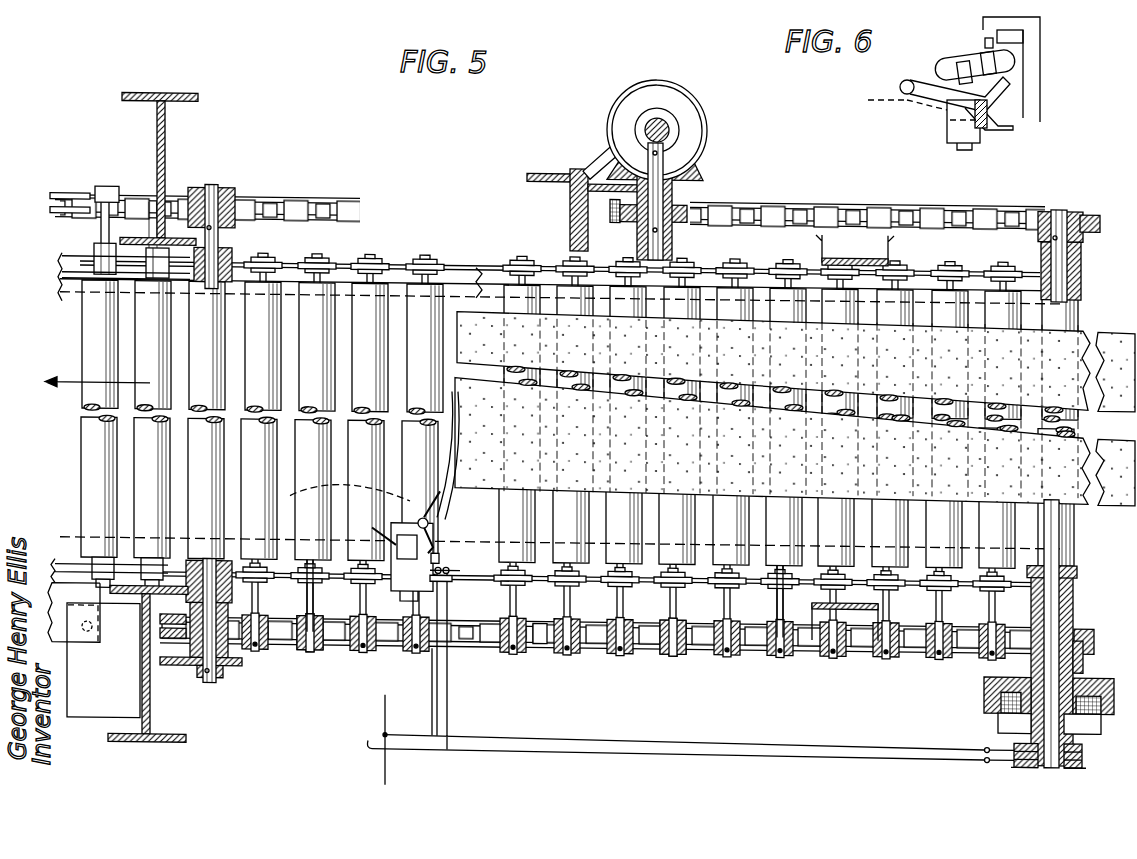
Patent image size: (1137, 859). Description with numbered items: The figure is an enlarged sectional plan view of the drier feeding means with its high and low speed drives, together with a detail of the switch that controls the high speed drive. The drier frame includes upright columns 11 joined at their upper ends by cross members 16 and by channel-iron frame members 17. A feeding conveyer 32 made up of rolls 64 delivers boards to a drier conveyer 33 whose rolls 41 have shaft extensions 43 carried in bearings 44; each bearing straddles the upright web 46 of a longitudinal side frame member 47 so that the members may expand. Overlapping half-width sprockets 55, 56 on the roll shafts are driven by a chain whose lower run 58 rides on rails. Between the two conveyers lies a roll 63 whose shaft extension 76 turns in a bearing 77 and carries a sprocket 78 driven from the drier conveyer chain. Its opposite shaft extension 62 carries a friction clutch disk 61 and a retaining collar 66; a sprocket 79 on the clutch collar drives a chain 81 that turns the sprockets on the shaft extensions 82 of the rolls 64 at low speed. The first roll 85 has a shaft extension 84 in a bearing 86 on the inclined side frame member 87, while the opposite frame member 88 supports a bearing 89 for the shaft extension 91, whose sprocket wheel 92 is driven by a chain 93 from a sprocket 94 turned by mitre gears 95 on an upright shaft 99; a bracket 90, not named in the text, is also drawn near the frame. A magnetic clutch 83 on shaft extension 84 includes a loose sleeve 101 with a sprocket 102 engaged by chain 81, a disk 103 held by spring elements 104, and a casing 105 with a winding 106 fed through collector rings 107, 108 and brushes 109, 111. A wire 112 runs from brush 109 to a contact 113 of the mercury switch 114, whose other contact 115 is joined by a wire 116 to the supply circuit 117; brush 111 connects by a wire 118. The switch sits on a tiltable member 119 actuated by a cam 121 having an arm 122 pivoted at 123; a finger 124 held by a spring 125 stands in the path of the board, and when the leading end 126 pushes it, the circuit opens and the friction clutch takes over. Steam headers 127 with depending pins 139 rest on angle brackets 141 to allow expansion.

In FIG. 5, the upright columns 11 is at (147, 91).
In FIG. 5, the cross members 16 is at (212, 526).
In FIG. 5, the frame members 17 is at (112, 740).
In FIG. 5, the feeding conveyers 32 is at (498, 273).
In FIG. 5, the drier conveyer 33 is at (78, 477).
In FIG. 5, the rolls 41 is at (105, 418).
In FIG. 5, the shaft extension 43 is at (100, 222).
In FIG. 5, the bearings 44 is at (95, 250).
In FIG. 5, the upright web 46 is at (62, 255).
In FIG. 5, the side frame members 47 is at (62, 274).
In FIG. 5, the sprocket 55 is at (540, 634).
In FIG. 5, the sprocket 56 is at (107, 185).
In FIG. 5, the lower run 58 is at (72, 192).
In FIG. 5, the disk 61 is at (240, 662).
In FIG. 5, the shaft extension 62 is at (207, 665).
In FIG. 5, the roll 63 is at (210, 318).
In FIG. 5, the rolls 64 is at (326, 312).
In FIG. 5, the collar 66 is at (219, 597).
In FIG. 5, the shaft extension 76 is at (218, 186).
In FIG. 5, the bearing 77 is at (233, 250).
In FIG. 5, the sprocket 78 is at (200, 185).
In FIG. 5, the sprocket 79 is at (166, 630).
In FIG. 5, the drive chain 81 is at (349, 637).
In FIG. 5, the shaft extensions 82 is at (360, 594).
In FIG. 5, the magnetic clutch 83 is at (1004, 719).
In FIG. 5, the shaft extension 84 is at (1058, 587).
In FIG. 5, the first roll 85 is at (1070, 518).
In FIG. 5, the bearing 86 is at (1077, 566).
In FIG. 5, the side frame member 87 is at (766, 640).
In FIG. 5, the frame member 88 is at (921, 260).
In FIG. 5, the bearing 89 is at (1082, 250).
In FIG. 5, the bracket 90 is at (848, 248).
In FIG. 5, the shaft extension 91 is at (1082, 278).
In FIG. 5, the sprocket wheel 92 is at (1085, 205).
In FIG. 5, the chain 93 is at (808, 198).
In FIG. 5, the sprocket 94 is at (690, 200).
In FIG. 5, the mitre gears 95 is at (700, 162).
In FIG. 5, the upright shaft 99 is at (666, 118).
In FIG. 5, the sleeve 101 is at (1081, 652).
In FIG. 5, the sprocket 102 is at (1085, 618).
In FIG. 5, the disk 103 is at (1000, 676).
In FIG. 5, the spring elements 104 is at (1010, 665).
In FIG. 5, the casing 105 is at (1005, 712).
In FIG. 5, the winding 106 is at (1000, 706).
In FIG. 5, the collector ring 107 is at (1082, 740).
In FIG. 5, the collector ring 108 is at (1083, 752).
In FIG. 5, the brush 109 is at (986, 734).
In FIG. 5, the brush 111 is at (988, 752).
In FIG. 5, the wire 112 is at (448, 693).
In FIG. 6, the wire 112 is at (1024, 70).
In FIG. 5, the contact 113 is at (450, 566).
In FIG. 6, the contact 113 is at (1010, 40).
In FIG. 5, the switch 114 is at (448, 576).
In FIG. 6, the switch 114 is at (936, 66).
In FIG. 5, the contact 115 is at (439, 553).
In FIG. 6, the contact 115 is at (985, 43).
In FIG. 5, the wire 116 is at (432, 694).
In FIG. 6, the wire 116 is at (1042, 92).
In FIG. 5, the supply circuit 117 is at (372, 766).
In FIG. 5, the wire 118 is at (788, 751).
In FIG. 6, the tiltable member 119 is at (1003, 94).
In FIG. 5, the cam 121 is at (373, 526).
In FIG. 6, the cam 121 is at (965, 148).
In FIG. 5, the arm 122 is at (436, 540).
In FIG. 5, the pivot 123 is at (430, 516).
In FIG. 5, the finger 124 is at (345, 485).
In FIG. 5, the spring 125 is at (430, 524).
In FIG. 5, the leading end 126 is at (452, 305).
In FIG. 5, the steam headers 127 is at (78, 645).
In FIG. 5, the depending pin 139 is at (94, 624).
In FIG. 5, the angle bracket 141 is at (80, 706).